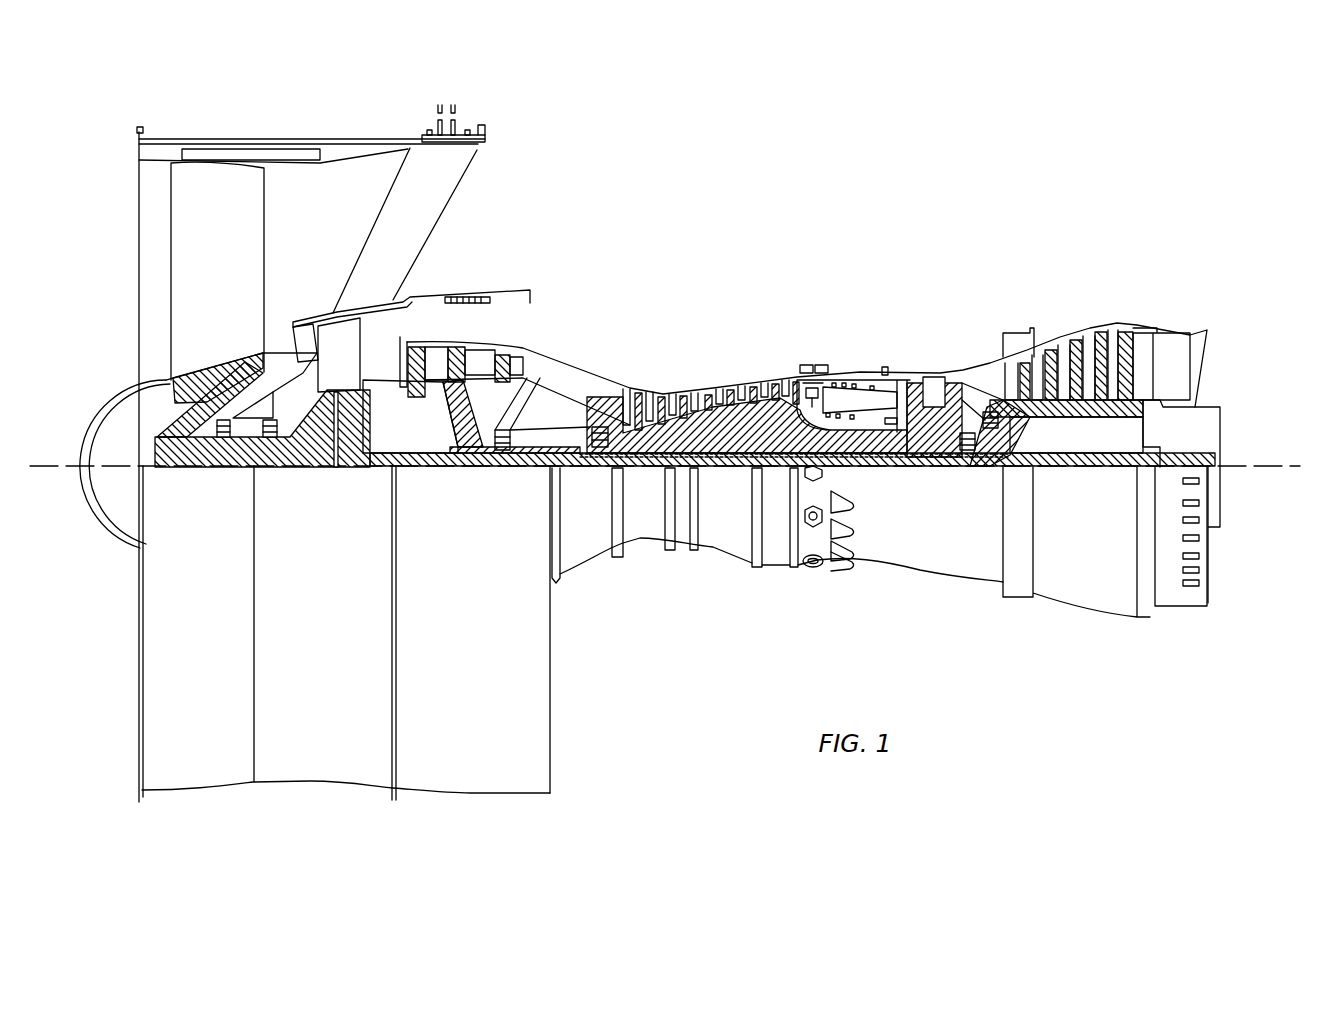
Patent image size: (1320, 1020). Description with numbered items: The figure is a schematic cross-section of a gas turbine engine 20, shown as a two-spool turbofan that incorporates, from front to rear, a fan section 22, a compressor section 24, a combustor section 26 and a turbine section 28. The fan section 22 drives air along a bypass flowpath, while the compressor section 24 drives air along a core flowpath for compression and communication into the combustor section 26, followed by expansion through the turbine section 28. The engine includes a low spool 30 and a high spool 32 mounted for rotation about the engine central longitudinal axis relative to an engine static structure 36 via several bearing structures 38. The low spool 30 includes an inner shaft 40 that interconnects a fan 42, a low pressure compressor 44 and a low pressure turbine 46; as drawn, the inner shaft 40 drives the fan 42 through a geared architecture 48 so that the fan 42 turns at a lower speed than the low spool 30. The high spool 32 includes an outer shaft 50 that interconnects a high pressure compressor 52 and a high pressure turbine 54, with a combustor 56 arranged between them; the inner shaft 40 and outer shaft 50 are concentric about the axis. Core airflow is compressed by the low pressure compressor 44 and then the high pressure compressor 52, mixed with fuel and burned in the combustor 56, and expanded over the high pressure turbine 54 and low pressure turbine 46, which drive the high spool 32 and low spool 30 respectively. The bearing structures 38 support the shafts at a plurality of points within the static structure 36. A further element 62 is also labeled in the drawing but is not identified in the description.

The gas turbine engine 20 is at (896, 180).
The fan section 22 is at (393, 117).
The compressor section 24 is at (402, 257).
The combustor section 26 is at (803, 257).
The turbine section 28 is at (1145, 257).
The low spool 30 is at (728, 466).
The high spool 32 is at (773, 430).
The engine static structure 36 is at (778, 563).
The bearing structures 38 is at (227, 440).
The inner shaft 40 is at (576, 462).
The fan 42 is at (194, 284).
The low pressure compressor 44 is at (481, 341).
The low pressure turbine 46 is at (1078, 340).
The geared architecture 48 is at (348, 442).
The outer shaft 50 is at (860, 454).
The high pressure compressor 52 is at (713, 433).
The high pressure turbine 54 is at (930, 376).
The combustor 56 is at (857, 401).
The fan exit guide vane 62 is at (395, 148).